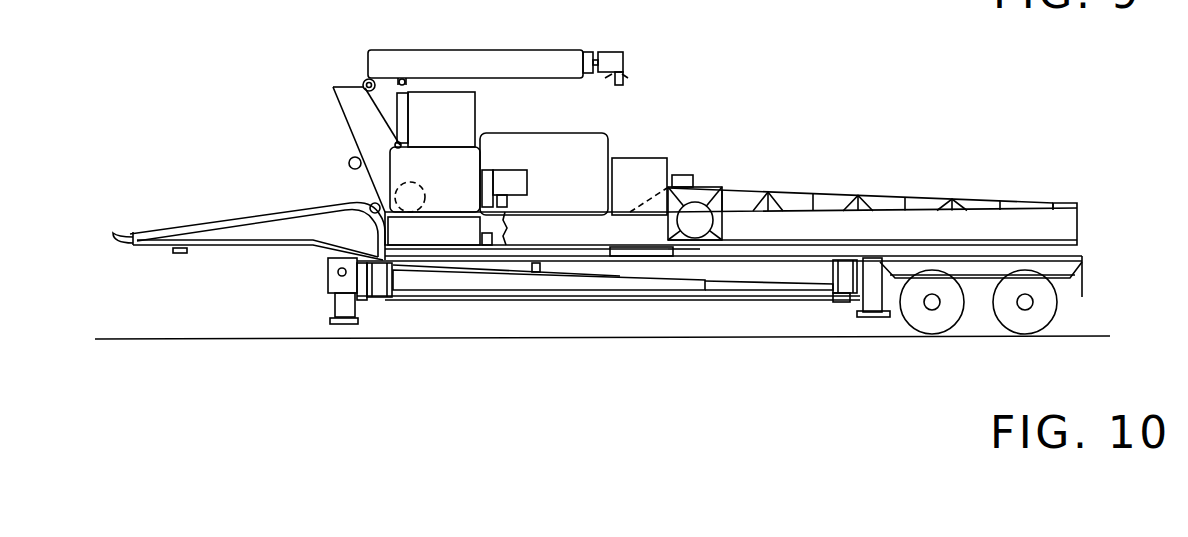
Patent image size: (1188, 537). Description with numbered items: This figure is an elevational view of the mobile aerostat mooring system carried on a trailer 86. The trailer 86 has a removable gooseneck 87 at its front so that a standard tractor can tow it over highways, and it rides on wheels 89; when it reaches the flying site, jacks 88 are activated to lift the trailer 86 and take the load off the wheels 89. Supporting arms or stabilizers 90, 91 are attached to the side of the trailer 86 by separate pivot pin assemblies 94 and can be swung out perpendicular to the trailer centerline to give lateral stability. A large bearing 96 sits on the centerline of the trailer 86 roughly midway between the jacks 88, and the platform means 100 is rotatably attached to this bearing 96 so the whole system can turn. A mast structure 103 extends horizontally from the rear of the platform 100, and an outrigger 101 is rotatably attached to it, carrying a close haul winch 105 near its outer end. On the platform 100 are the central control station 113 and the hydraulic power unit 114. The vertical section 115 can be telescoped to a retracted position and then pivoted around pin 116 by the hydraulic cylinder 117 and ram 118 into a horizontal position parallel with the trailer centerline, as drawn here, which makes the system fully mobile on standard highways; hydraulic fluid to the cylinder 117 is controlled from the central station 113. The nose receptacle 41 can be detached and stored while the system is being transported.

The nose receptacle 41 is at (403, 192).
The trailer 86 is at (1073, 267).
The removable gooseneck 87 is at (220, 218).
The jacks 88 is at (328, 303).
The wheels 89 is at (1015, 318).
The supporting arm or stabilizer 90 is at (428, 284).
The supporting arm or stabilizer 91 is at (772, 272).
The pivot pin assembly 94 is at (380, 283).
The large bearing 96 is at (684, 253).
The platform means 100 is at (575, 236).
The outrigger 101 is at (832, 227).
The mast structure 103 is at (963, 203).
The close haul winch 105 is at (697, 210).
The central control station 113 is at (466, 105).
The hydraulic power unit 114 is at (643, 167).
The vertical section 115 is at (463, 58).
The pin 116 is at (366, 81).
The hydraulic cylinder 117 is at (400, 110).
The ram 118 is at (415, 80).